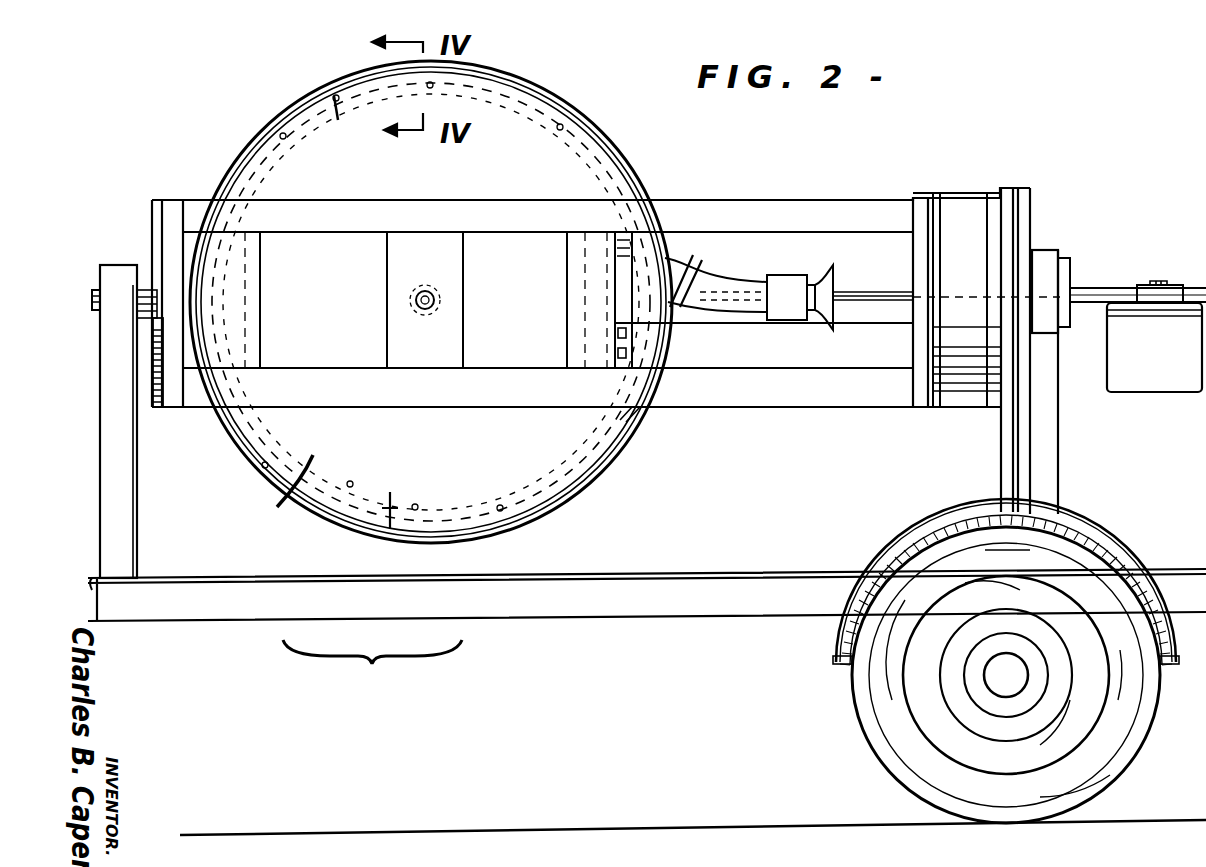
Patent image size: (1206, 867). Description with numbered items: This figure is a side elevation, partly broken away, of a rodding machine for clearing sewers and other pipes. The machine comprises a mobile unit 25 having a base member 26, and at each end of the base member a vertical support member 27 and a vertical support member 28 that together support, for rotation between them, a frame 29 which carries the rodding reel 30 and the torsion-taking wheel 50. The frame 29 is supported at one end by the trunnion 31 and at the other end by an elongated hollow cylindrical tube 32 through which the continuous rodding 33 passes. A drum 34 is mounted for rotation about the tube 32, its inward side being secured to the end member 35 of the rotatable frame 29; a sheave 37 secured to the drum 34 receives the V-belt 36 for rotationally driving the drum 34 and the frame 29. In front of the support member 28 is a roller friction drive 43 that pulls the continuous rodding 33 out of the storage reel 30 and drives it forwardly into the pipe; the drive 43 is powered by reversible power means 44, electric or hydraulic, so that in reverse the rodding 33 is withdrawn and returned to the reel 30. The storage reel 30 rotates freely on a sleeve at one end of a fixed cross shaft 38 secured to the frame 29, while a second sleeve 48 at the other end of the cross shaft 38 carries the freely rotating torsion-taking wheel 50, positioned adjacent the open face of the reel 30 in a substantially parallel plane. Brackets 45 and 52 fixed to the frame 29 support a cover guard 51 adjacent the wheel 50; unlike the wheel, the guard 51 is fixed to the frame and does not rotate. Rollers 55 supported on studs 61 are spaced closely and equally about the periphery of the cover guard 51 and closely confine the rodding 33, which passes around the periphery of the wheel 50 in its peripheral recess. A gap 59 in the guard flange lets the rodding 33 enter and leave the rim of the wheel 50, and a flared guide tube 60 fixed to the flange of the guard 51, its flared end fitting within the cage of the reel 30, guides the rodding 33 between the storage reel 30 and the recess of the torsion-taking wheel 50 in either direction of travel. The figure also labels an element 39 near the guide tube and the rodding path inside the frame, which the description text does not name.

The mobile unit 25 is at (372, 677).
The base member 26 is at (562, 598).
The vertical support member 27 is at (122, 513).
The vertical support member 28 is at (1048, 462).
The frame 29 is at (786, 402).
The rodding reel 30 is at (548, 504).
The trunnion 31 is at (92, 300).
The hollow cylindrical tube 32 is at (1063, 274).
The continuous rodding 33 is at (868, 292).
The drum 34 is at (956, 199).
The end member 35 is at (921, 199).
The V-belt 36 is at (1001, 436).
The sheave 37 is at (1023, 196).
The cross shaft 38 is at (425, 309).
The discharge pipe 39 is at (738, 283).
The roller friction drive 43 is at (1176, 278).
The power means 44 is at (1172, 361).
The bracket 45 is at (232, 283).
The second sleeve 48 is at (405, 303).
The torsion-taking wheel 50 is at (374, 524).
The cover guard 51 is at (289, 500).
The bracket 52 is at (625, 282).
The rollers 55 is at (335, 104).
The gap 59 is at (680, 265).
The flared guide tube 60 is at (645, 418).
The studs 61 is at (280, 142).